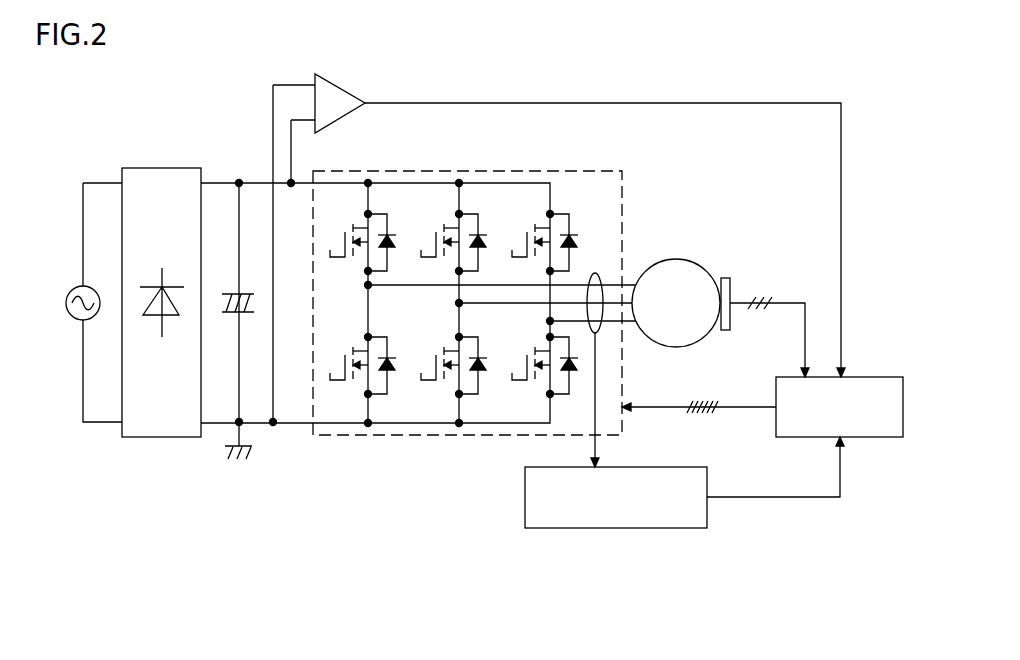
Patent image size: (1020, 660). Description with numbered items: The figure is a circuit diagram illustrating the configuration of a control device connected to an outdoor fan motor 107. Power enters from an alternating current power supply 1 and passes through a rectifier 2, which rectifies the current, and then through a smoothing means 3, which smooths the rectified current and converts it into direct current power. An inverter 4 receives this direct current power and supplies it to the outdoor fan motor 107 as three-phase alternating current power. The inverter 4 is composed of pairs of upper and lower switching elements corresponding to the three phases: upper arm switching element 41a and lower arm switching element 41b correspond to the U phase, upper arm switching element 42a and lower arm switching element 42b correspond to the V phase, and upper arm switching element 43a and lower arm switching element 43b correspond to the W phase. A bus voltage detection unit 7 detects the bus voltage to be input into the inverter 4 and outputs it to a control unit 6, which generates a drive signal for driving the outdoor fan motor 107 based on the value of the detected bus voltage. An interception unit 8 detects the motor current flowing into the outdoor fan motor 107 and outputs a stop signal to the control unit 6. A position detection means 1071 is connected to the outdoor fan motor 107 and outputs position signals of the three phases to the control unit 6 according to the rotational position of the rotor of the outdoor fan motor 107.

The alternating current power supply 1 is at (74, 285).
The rectifier 2 is at (162, 168).
The smoothing means 3 is at (230, 293).
The inverter 4 is at (467, 289).
The upper arm switching element 41a is at (352, 228).
The upper arm switching element 42a is at (443, 228).
The upper arm switching element 43a is at (534, 228).
The lower arm switching element 41b is at (352, 350).
The lower arm switching element 42b is at (443, 350).
The lower arm switching element 43b is at (534, 350).
The control unit 6 is at (875, 377).
The bus voltage detection unit 7 is at (340, 88).
The interception unit 8 is at (624, 528).
The outdoor fan motor 107 is at (676, 259).
The position detection means 1071 is at (726, 278).